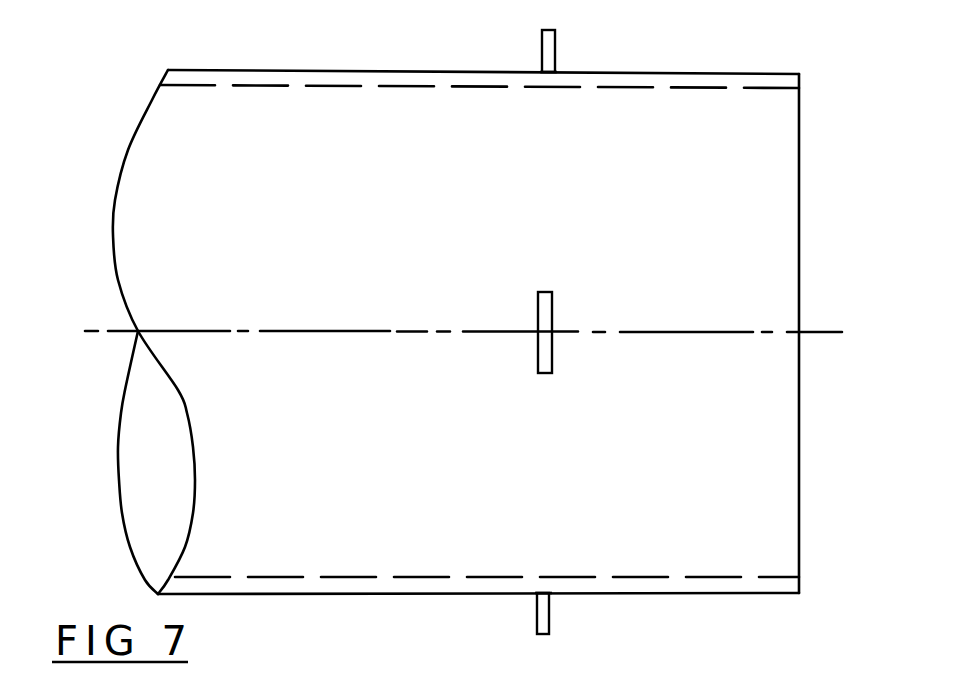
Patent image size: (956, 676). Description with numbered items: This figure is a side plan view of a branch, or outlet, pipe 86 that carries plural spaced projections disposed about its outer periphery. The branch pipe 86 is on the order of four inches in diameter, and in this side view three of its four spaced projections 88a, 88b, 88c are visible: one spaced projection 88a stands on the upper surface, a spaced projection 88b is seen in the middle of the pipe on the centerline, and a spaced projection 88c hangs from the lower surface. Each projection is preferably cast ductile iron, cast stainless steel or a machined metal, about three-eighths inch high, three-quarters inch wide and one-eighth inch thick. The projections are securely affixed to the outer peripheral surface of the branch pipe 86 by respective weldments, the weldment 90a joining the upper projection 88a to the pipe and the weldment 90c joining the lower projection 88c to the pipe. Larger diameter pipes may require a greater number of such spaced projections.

The branch pipe 86 is at (322, 66).
The spaced projection 88a is at (556, 45).
The spaced projection 88b is at (553, 312).
The spaced projection 88c is at (537, 619).
The weldment 90a is at (541, 71).
The weldment 90c is at (553, 597).